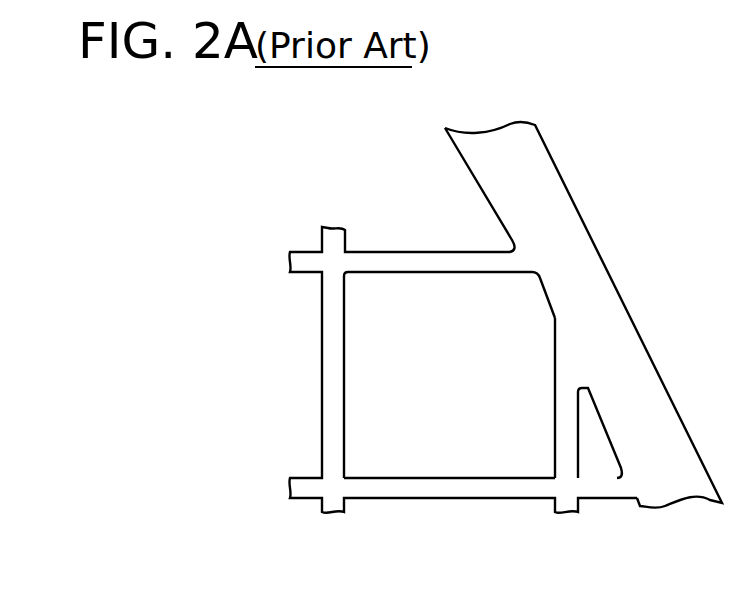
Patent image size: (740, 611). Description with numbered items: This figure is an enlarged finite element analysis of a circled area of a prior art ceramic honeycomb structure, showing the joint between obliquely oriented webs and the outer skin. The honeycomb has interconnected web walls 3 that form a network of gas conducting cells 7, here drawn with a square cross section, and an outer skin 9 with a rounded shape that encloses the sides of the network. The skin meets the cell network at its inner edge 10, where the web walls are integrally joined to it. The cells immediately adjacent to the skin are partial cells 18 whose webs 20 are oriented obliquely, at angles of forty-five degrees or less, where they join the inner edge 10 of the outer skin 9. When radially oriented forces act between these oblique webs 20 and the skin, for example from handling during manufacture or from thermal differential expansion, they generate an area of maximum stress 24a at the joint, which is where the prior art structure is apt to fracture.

The web walls 3 is at (347, 275).
The gas conducting cells 7 is at (297, 380).
The outer skin 9 is at (612, 223).
The inner edge of the outer skin 10 is at (540, 280).
The partial cells 18 is at (417, 205).
The webs 20 is at (554, 414).
The area of maximum stress 24a is at (583, 390).